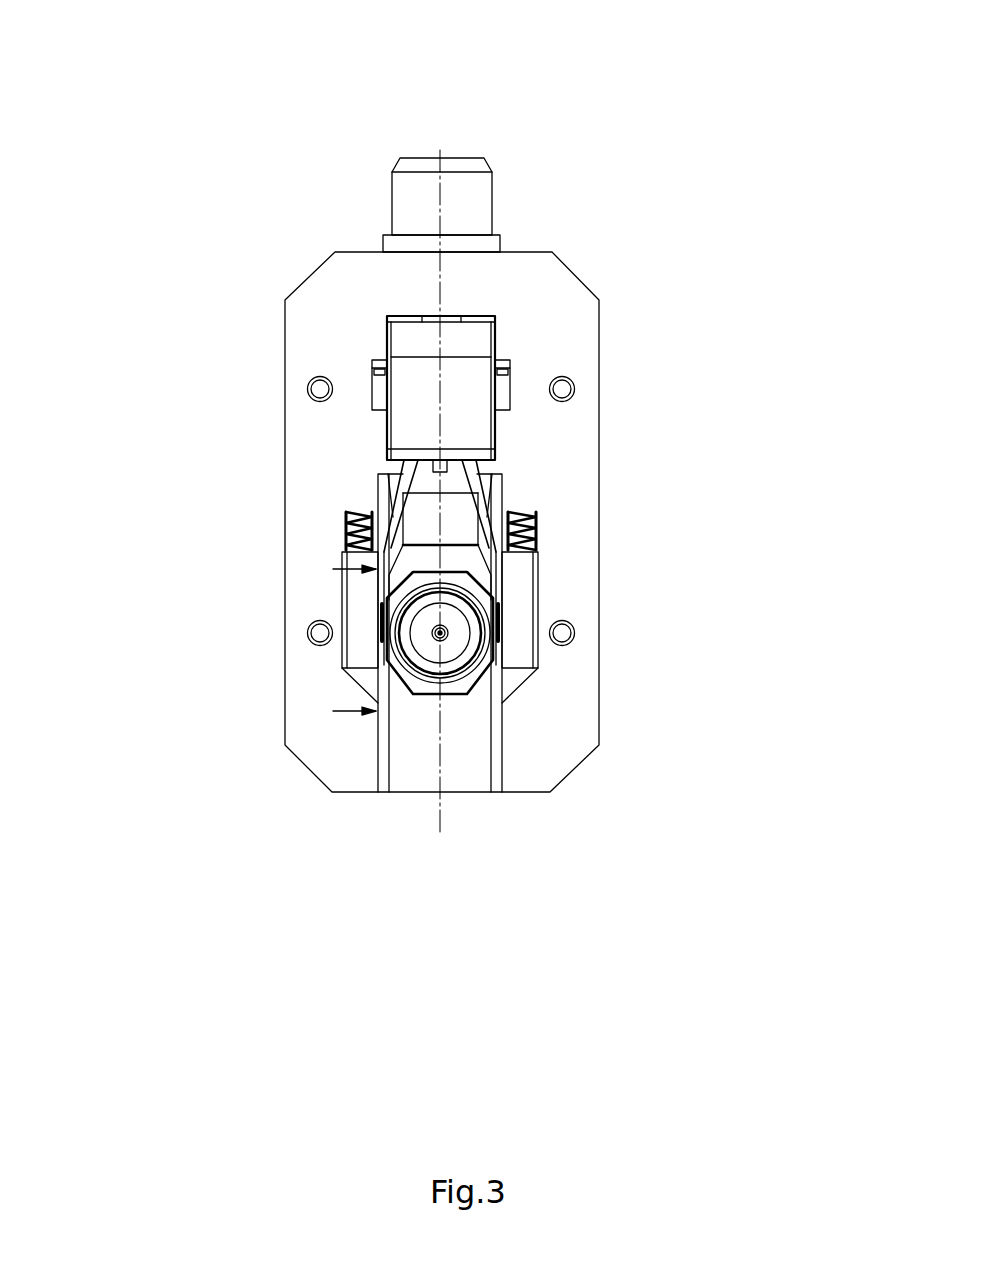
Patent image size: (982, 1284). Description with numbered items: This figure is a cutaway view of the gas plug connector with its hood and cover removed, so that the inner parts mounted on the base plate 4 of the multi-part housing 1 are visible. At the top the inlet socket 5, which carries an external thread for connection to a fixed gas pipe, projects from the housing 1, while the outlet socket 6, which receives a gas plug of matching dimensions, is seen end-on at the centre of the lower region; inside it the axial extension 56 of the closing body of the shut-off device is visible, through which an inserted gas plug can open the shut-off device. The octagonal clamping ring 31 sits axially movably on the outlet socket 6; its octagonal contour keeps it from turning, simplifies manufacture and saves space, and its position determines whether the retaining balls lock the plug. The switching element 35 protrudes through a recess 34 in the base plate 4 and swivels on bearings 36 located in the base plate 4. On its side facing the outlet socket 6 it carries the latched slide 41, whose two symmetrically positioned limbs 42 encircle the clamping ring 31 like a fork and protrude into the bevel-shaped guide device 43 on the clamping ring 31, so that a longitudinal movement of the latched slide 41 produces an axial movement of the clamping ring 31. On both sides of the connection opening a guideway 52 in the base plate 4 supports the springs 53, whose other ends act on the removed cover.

The housing 1 is at (463, 418).
The base plate 4 is at (331, 522).
The inlet socket 5 is at (460, 128).
The outlet socket 6 is at (276, 660).
The clamping ring 31 is at (278, 593).
The recess 34 is at (625, 299).
The switching element 35 is at (279, 348).
The bearings 36 is at (617, 376).
The latched slide 41 is at (282, 626).
The limbs 42 is at (623, 573).
The guide device 43 is at (622, 626).
The guideway 52 is at (602, 623).
The springs 53 is at (604, 481).
The axial extension 56 is at (647, 677).